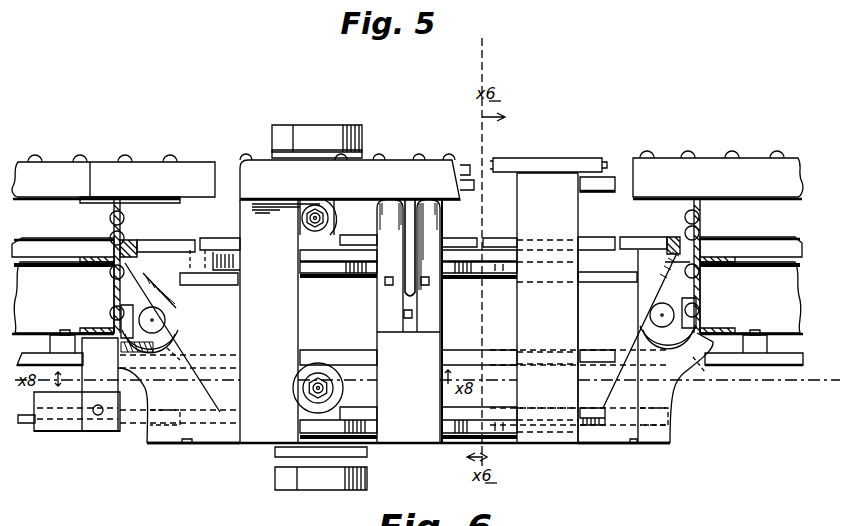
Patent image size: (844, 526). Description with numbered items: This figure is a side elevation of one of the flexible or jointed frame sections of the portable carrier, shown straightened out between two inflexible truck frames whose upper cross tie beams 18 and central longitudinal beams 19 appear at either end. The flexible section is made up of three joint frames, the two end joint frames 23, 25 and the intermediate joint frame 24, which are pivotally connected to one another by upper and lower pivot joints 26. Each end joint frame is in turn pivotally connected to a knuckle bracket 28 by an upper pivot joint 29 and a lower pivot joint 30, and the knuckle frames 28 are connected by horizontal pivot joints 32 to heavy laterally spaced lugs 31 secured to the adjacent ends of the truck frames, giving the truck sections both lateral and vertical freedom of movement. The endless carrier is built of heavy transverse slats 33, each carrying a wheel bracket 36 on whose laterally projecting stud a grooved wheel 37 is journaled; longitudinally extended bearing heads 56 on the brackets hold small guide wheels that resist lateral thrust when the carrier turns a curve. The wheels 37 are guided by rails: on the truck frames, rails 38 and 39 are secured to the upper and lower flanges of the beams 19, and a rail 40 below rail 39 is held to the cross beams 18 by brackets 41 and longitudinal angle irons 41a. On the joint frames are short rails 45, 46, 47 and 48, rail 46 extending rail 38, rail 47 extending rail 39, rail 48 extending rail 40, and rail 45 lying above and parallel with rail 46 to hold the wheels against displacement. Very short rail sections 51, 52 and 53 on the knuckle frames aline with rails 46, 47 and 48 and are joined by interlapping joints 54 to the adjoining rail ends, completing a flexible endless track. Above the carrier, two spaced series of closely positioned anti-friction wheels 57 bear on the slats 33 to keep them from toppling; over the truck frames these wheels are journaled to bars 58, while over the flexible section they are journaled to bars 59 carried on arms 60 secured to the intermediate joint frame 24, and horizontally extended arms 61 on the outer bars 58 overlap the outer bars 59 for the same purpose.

The upper cross tie beams 18 is at (112, 292).
The central longitudinal beams 19 is at (400, 312).
The end joint frame 23 is at (244, 321).
The intermediate joint frame 24 is at (409, 321).
The end joint frame 25 is at (547, 308).
The upper and lower pivot joints 26 is at (325, 277).
The knuckle bracket 28 is at (415, 346).
The upper pivot joint 29 is at (190, 280).
The lower pivot joint 30 is at (195, 445).
The lugs 31 is at (158, 291).
The horizontal pivot joint 32 is at (162, 319).
The transverse slat 33 is at (315, 128).
The wheel bracket 36 is at (363, 153).
The grooved wheel 37 is at (305, 228).
The upper rail 38 is at (40, 248).
The lower rail 39 is at (32, 360).
The rail 40 is at (25, 424).
The bracket 41 is at (108, 420).
The longitudinal angle iron 41a is at (62, 430).
The short rail 45 is at (605, 180).
The short rail 46 is at (600, 240).
The short rail 47 is at (597, 354).
The short rail 48 is at (590, 410).
The short rail section 51 is at (178, 243).
The short rail section 52 is at (182, 358).
The short rail section 53 is at (173, 425).
The interlapping joint 54 is at (133, 246).
The bearing head 56 is at (545, 158).
The anti-friction wheels 57 is at (80, 162).
The longitudinally extended bar 58 is at (50, 170).
The laterally spaced bar 59 is at (357, 186).
The arm 60 is at (426, 228).
The horizontally extended arm 61 is at (190, 170).